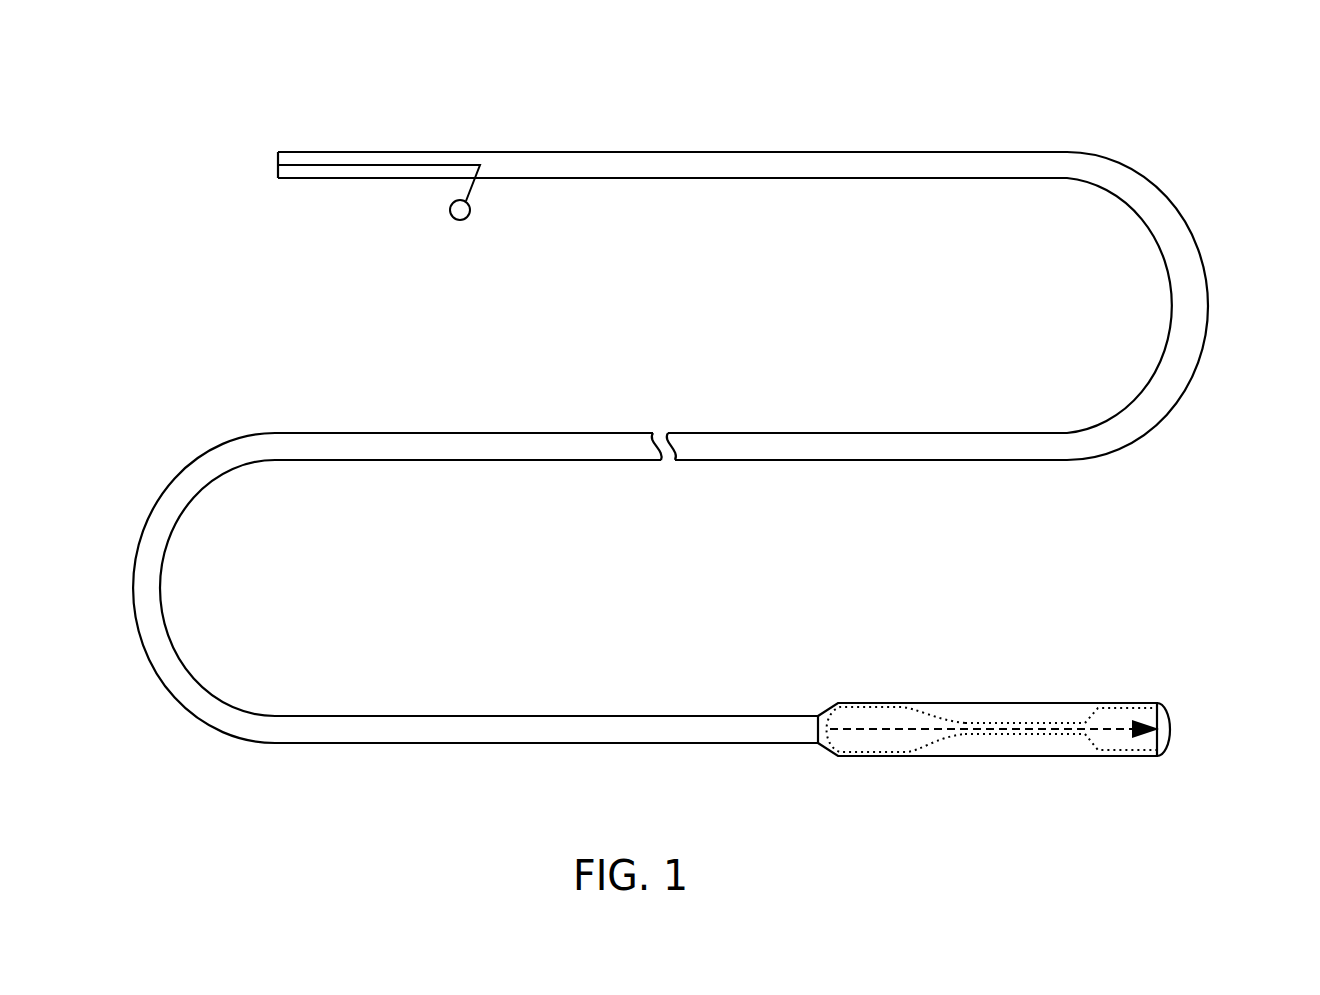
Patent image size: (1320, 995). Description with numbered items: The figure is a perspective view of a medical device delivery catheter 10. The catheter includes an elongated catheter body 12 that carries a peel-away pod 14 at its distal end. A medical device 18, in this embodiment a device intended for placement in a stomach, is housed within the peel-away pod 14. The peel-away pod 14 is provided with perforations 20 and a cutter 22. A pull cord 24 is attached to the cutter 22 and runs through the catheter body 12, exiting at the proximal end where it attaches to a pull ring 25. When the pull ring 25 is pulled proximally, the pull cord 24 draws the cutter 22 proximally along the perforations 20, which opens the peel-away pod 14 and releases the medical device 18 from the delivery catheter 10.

The medical device delivery catheter 10 is at (1060, 112).
The catheter body 12 is at (1195, 285).
The peel-away pod 14 is at (982, 700).
The medical device 18 is at (1104, 716).
The perforations 20 is at (1054, 733).
The cutter 22 is at (1146, 740).
The pull cord 24 is at (487, 190).
The pull ring 25 is at (472, 222).